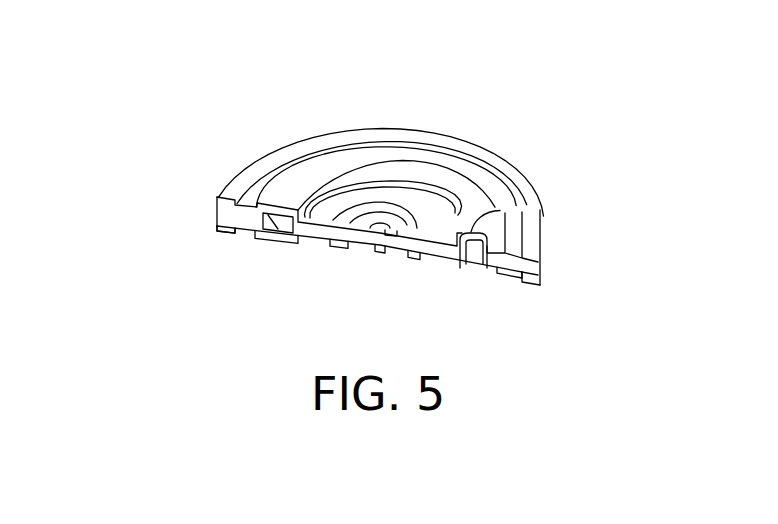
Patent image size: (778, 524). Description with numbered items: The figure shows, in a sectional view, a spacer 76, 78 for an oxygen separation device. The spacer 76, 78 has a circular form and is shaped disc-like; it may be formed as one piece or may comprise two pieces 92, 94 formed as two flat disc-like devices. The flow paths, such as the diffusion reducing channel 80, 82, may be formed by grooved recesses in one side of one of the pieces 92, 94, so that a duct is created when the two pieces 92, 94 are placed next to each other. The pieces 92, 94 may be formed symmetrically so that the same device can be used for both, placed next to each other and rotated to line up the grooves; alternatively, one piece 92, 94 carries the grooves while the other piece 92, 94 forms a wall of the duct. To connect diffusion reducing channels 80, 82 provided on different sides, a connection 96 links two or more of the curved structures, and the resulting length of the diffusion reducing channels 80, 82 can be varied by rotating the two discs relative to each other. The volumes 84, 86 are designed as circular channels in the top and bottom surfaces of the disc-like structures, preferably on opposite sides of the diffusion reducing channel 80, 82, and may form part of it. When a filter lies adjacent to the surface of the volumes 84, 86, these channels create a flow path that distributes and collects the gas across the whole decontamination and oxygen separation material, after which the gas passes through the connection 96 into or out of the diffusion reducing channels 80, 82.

The spacer 76 is at (168, 94).
The spacer 78 is at (402, 218).
The diffusion reducing channel 80 is at (280, 222).
The diffusion reducing channel 82 is at (478, 258).
The volume 84 is at (392, 190).
The volume 86 is at (365, 228).
The piece 92 is at (242, 172).
The piece 94 is at (227, 226).
The connection 96 is at (500, 210).